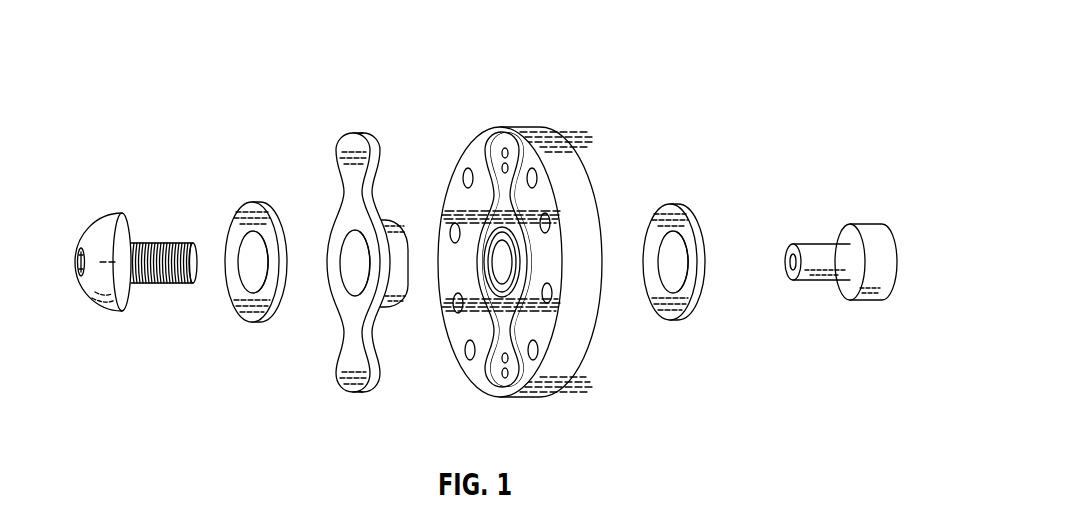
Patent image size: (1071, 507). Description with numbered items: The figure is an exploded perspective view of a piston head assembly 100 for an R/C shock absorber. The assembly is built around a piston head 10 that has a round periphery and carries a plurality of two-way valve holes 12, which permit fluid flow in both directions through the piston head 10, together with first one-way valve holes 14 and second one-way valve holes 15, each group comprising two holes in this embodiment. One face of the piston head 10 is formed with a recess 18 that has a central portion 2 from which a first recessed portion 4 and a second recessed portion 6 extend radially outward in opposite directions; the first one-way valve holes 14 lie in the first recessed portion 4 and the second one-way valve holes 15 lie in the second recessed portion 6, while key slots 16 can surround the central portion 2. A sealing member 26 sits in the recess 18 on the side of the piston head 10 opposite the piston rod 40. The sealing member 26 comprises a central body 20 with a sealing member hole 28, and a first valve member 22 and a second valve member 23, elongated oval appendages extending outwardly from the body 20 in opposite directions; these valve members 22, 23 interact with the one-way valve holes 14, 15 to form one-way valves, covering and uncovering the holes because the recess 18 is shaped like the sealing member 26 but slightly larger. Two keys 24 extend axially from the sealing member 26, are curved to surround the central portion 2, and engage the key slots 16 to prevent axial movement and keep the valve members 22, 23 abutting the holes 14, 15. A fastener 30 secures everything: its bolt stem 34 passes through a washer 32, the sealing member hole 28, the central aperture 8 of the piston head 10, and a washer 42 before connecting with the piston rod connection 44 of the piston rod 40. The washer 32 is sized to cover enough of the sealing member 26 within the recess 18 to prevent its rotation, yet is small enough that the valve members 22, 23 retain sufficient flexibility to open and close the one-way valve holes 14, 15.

The piston head assembly 100 is at (784, 34).
The central portion 2 is at (512, 243).
The first recessed portion 4 is at (497, 155).
The second recessed portion 6 is at (497, 365).
The central aperture 8 is at (507, 268).
The piston head 10 is at (523, 239).
The two-way valve holes 12 is at (466, 352).
The first one-way valve holes 14 is at (506, 148).
The second one-way valve holes 15 is at (510, 374).
The key slots 16 is at (503, 272).
The recess 18 is at (500, 212).
The central body 20 is at (350, 305).
The first valve member 22 is at (356, 135).
The second valve member 23 is at (350, 388).
The keys 24 is at (399, 216).
The sealing member 26 is at (352, 258).
The sealing member hole 28 is at (355, 260).
The fastener 30 is at (108, 215).
The washer 32 is at (258, 205).
The bolt stem 34 is at (170, 244).
The piston rod 40 is at (850, 241).
The washer 42 is at (678, 205).
The piston rod connection 44 is at (815, 246).